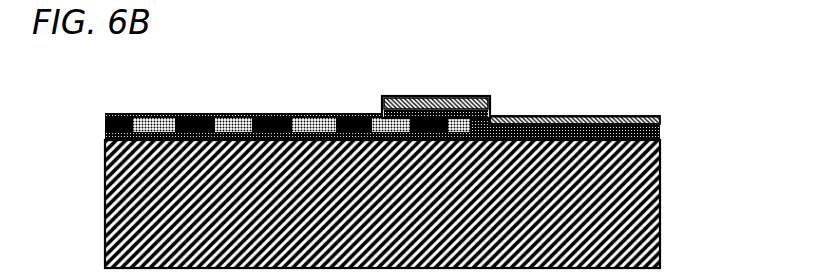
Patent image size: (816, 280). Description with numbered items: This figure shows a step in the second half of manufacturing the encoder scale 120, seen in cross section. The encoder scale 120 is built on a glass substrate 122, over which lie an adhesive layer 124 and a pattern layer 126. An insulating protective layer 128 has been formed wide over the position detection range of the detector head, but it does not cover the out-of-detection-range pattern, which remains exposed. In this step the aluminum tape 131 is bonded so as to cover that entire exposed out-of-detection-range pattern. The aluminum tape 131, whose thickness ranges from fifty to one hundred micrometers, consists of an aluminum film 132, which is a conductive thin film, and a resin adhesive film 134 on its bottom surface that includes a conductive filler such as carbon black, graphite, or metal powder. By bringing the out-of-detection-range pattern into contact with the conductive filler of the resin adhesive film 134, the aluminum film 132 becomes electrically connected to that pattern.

The encoder scale 120 is at (452, 78).
The glass substrate 122 is at (661, 184).
The adhesive layer 124 is at (662, 131).
The pattern layer 126 is at (282, 115).
The protective layer 128 is at (159, 116).
The aluminum tape 131 is at (503, 94).
The aluminum film 132 is at (545, 115).
The resin adhesive film 134 is at (603, 117).